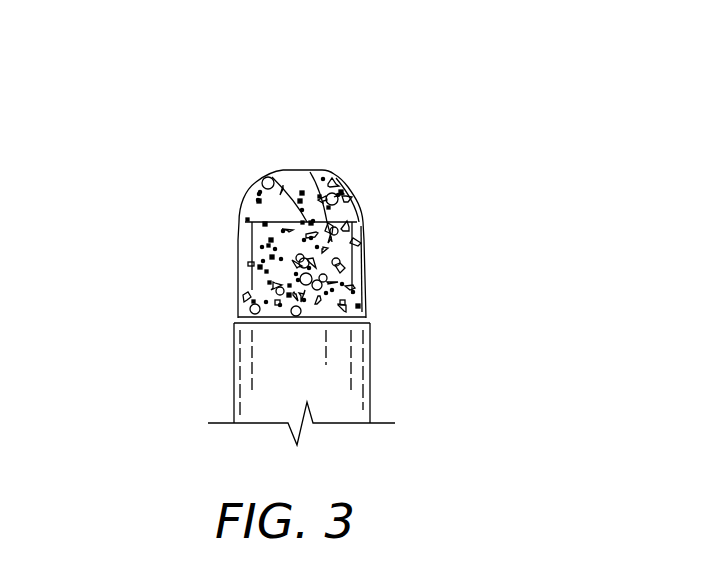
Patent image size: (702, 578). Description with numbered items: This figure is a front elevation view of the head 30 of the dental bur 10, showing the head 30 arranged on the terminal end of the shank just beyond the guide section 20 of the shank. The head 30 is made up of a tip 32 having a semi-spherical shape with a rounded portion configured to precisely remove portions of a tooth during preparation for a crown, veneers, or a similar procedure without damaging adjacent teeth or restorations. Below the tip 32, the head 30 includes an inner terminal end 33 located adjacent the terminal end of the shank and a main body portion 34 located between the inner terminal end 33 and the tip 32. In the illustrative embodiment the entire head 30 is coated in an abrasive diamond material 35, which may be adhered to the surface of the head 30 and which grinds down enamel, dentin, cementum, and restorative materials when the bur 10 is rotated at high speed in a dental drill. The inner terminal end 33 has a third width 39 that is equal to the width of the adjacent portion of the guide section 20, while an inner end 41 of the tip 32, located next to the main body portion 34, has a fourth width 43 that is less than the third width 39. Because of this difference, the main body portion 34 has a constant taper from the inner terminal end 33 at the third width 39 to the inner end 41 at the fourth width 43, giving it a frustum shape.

The dental bur 10 is at (149, 140).
The guide section 20 is at (392, 400).
The head 30 is at (463, 205).
The tip 32 is at (331, 160).
The inner terminal end 33 is at (226, 315).
The main body portion 34 is at (375, 279).
The abrasive diamond material 35 is at (282, 240).
The third width 39 is at (297, 318).
The inner end 41 is at (374, 208).
The fourth width 43 is at (282, 188).